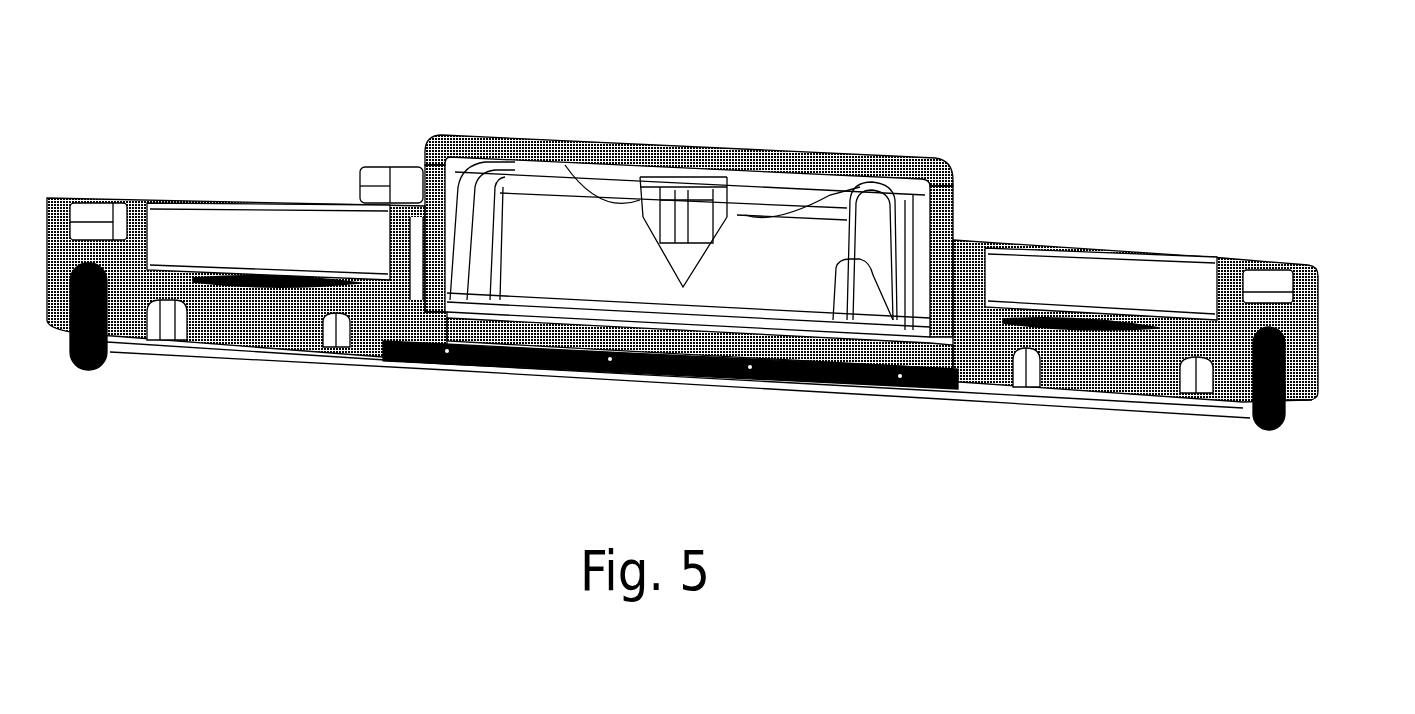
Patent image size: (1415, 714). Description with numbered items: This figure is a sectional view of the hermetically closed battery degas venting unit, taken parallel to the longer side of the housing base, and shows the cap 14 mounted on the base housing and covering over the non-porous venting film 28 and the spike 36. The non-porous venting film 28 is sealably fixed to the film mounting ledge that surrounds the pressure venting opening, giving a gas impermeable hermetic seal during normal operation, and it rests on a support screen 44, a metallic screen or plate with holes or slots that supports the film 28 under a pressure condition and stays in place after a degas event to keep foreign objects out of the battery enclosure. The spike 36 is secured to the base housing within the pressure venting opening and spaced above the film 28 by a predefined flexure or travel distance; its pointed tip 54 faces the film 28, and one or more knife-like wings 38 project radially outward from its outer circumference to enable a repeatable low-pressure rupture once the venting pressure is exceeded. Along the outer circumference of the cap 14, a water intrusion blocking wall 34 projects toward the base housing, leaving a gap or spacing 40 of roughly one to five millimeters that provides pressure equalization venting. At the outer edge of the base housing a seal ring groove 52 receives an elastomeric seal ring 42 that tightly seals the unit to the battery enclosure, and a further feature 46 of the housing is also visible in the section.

The cap 14 is at (923, 172).
The non-porous venting film 28 is at (565, 338).
The water intrusion blocking wall 34 is at (947, 227).
The spike 36 is at (692, 213).
The knife-like wing 38 is at (645, 212).
The gap or spacing 40 is at (935, 340).
The seal ring 42 is at (82, 358).
The support screen 44 is at (503, 370).
The tab 46 is at (393, 168).
The seal ring groove 52 is at (1285, 390).
The pointed tip 54 is at (683, 287).